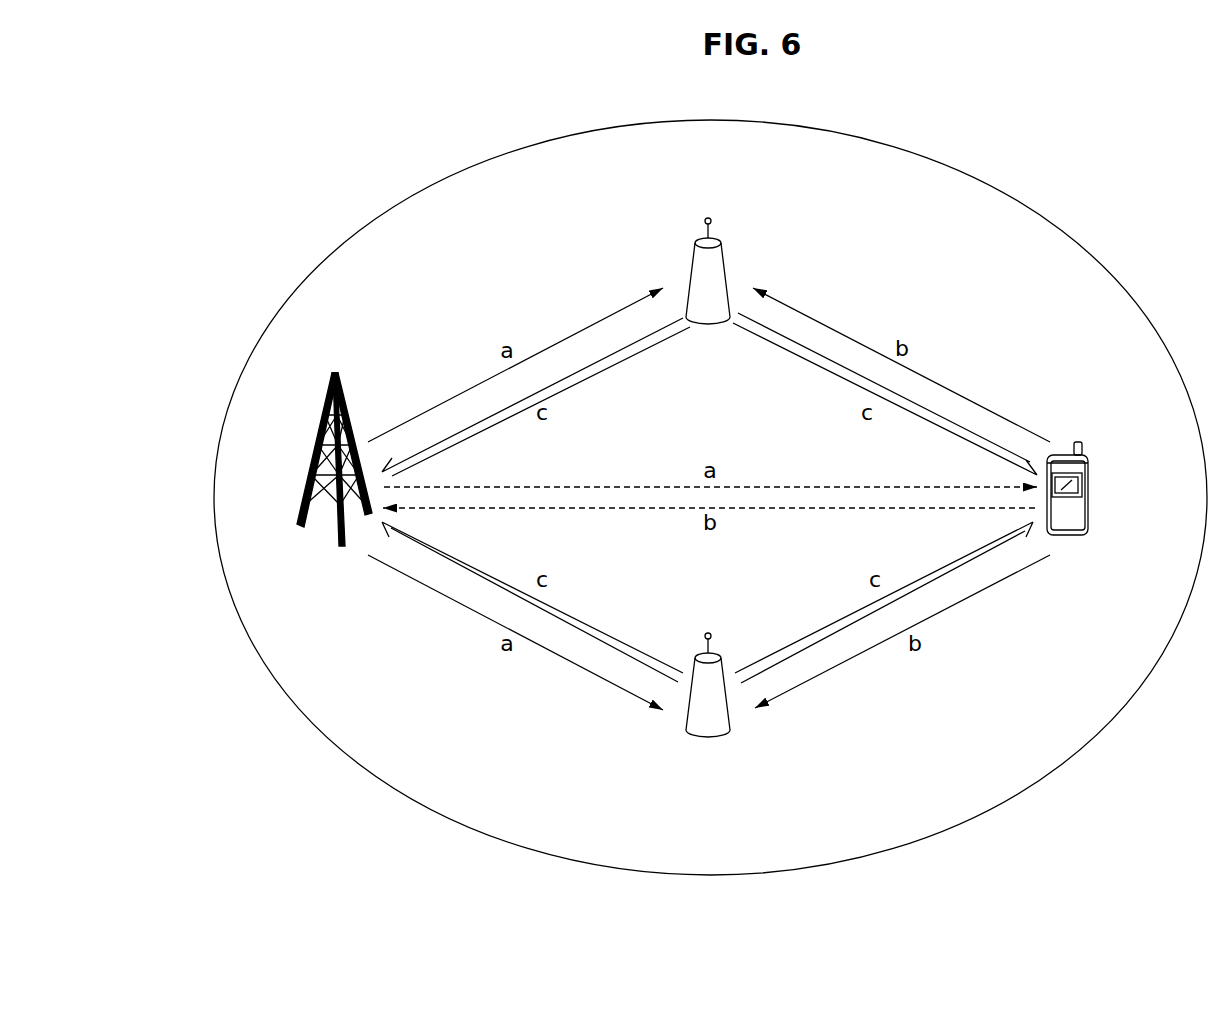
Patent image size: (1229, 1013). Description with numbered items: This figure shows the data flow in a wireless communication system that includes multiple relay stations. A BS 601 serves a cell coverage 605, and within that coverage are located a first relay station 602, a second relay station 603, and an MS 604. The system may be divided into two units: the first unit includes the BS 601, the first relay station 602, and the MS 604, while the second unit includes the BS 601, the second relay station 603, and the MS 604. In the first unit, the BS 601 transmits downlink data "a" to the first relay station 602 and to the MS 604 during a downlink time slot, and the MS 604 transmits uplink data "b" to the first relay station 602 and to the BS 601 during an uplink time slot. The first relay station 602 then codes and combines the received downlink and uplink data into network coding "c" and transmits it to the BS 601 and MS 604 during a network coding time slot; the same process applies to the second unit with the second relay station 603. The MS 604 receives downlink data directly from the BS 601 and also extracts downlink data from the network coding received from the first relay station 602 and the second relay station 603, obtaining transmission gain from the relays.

The BS 601 is at (335, 338).
The RS1 602 is at (712, 173).
The RS2 603 is at (712, 772).
The MS 604 is at (1118, 470).
The cell coverage 605 is at (710, 120).